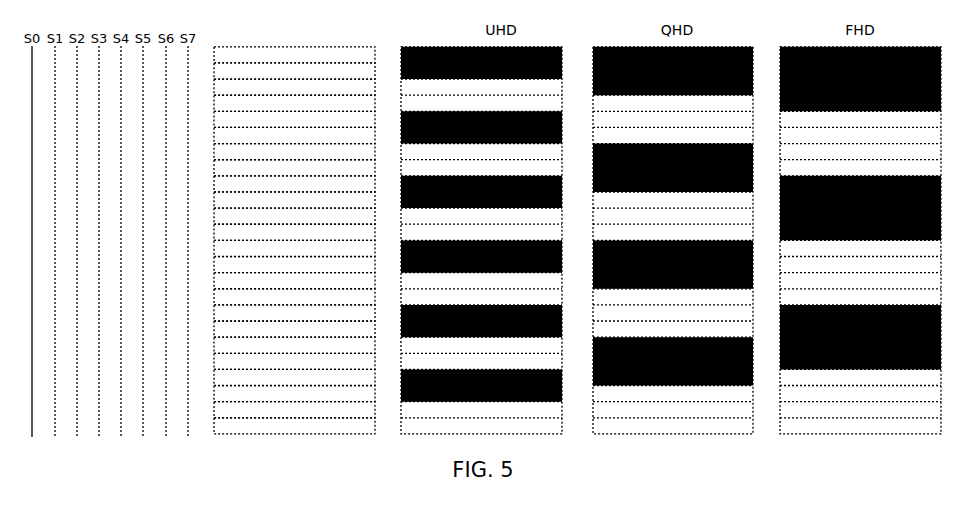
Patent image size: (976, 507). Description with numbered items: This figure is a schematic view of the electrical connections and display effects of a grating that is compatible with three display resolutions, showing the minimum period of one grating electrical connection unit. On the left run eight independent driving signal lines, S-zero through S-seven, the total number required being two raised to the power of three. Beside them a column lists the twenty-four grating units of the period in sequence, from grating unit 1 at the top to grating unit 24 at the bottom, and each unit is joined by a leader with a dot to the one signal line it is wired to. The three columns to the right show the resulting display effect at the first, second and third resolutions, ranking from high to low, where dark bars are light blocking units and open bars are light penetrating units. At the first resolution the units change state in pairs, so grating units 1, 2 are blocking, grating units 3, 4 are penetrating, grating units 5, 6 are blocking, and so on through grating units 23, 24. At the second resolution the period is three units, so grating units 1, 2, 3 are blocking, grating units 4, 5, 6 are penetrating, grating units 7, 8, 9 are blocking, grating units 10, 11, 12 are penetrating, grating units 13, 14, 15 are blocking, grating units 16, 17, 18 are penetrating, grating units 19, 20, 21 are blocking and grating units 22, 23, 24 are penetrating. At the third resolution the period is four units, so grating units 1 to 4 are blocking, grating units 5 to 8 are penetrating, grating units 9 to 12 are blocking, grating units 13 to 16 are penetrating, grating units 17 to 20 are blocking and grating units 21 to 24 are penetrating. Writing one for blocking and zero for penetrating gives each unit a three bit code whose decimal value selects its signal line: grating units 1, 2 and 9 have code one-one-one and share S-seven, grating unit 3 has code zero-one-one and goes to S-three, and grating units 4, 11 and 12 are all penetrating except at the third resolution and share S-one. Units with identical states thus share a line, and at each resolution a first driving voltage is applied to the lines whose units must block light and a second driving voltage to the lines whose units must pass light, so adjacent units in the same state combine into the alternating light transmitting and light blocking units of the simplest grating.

The first grating unit 1 is at (188, 56).
The second grating unit 2 is at (188, 72).
The third grating unit 3 is at (99, 89).
The fourth grating unit 4 is at (55, 105).
The fifth grating unit 5 is at (121, 121).
The sixth grating unit 6 is at (121, 137).
The seventh grating unit 7 is at (77, 153).
The eighth grating unit 8 is at (77, 169).
The ninth grating unit 9 is at (188, 185).
The tenth grating unit 10 is at (143, 202).
The eleventh grating unit 11 is at (55, 218).
The twelfth grating unit 12 is at (55, 234).
The thirteenth grating unit 13 is at (166, 250).
The fourteenth grating unit 14 is at (166, 266).
The fifteenth grating unit 15 is at (77, 282).
The sixteenth grating unit 16 is at (32, 298).
The seventeenth grating unit 17 is at (143, 314).
The eighteenth grating unit 18 is at (143, 330).
The nineteenth grating unit 19 is at (99, 347).
The twentieth grating unit 20 is at (99, 363).
The twenty-first grating unit 21 is at (166, 379).
The twenty-second grating unit 22 is at (121, 395).
The twenty-third grating unit 23 is at (32, 411).
The twenty-fourth grating unit 24 is at (32, 427).